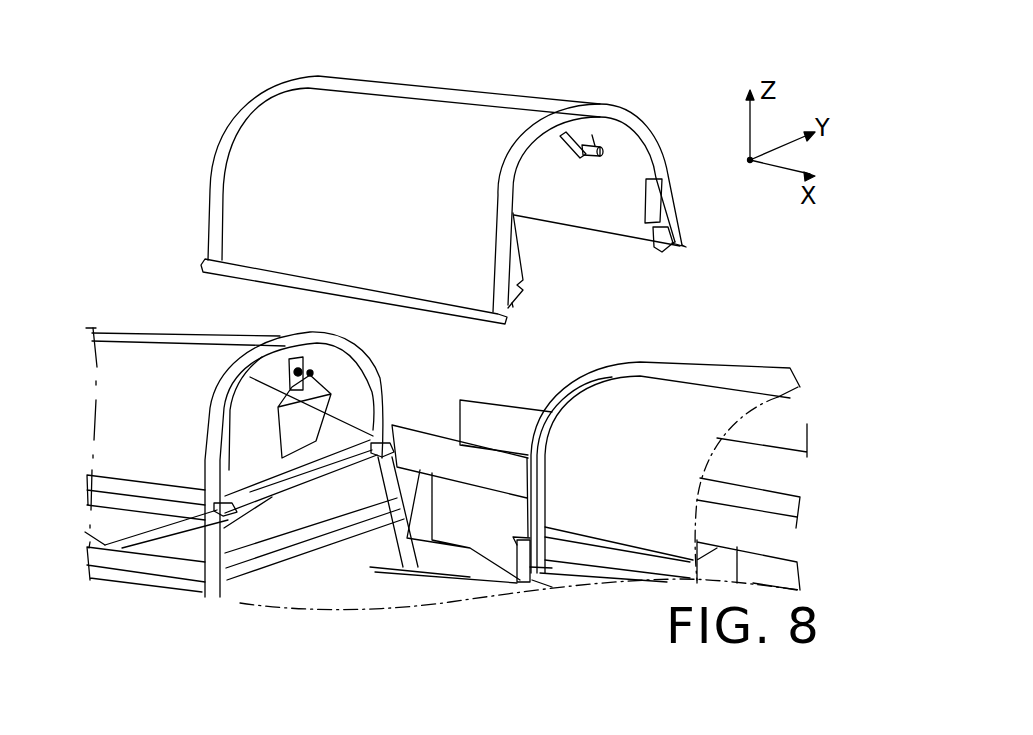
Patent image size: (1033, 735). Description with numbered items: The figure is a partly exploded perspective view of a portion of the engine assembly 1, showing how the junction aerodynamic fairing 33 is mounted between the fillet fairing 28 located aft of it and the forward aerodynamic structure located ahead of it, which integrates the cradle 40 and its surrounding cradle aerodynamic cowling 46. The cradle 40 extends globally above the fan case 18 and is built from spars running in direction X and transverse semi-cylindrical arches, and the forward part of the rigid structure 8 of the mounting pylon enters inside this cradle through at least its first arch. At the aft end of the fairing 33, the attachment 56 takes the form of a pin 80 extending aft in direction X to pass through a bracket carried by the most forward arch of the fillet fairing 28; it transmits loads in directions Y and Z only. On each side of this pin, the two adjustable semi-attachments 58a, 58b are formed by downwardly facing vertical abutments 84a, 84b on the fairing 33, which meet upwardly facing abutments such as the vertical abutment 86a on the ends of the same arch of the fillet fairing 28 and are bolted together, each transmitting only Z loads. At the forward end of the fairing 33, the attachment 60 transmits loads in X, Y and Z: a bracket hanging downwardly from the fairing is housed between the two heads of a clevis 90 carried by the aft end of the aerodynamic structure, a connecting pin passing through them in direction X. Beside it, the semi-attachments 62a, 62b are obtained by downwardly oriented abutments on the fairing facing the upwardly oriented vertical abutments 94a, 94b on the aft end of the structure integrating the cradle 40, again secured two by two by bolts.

The vehicle 1 is at (126, 63).
The junction aerodynamic fairing 33 is at (483, 88).
The attachment 56 is at (632, 66).
The pin 80 is at (600, 146).
The vertical abutment 84b is at (680, 247).
The semi-attachment 58b is at (719, 245).
The vertical abutment 84a is at (520, 287).
The semi-attachment 58a is at (560, 482).
The fillet fairing 28 is at (724, 372).
The cradle aerodynamic cowling 46 is at (155, 350).
The attachment 60 is at (155, 276).
The clevis 90 is at (299, 367).
The semi-attachment 62b is at (340, 428).
The vertical abutment 94b is at (398, 447).
The rigid structure 8 is at (503, 402).
The vertical abutment 94a is at (224, 508).
The semi-attachment 62a is at (152, 587).
The fan case 18 is at (267, 593).
The cradle 40 is at (345, 540).
The vertical abutment 86a is at (520, 538).